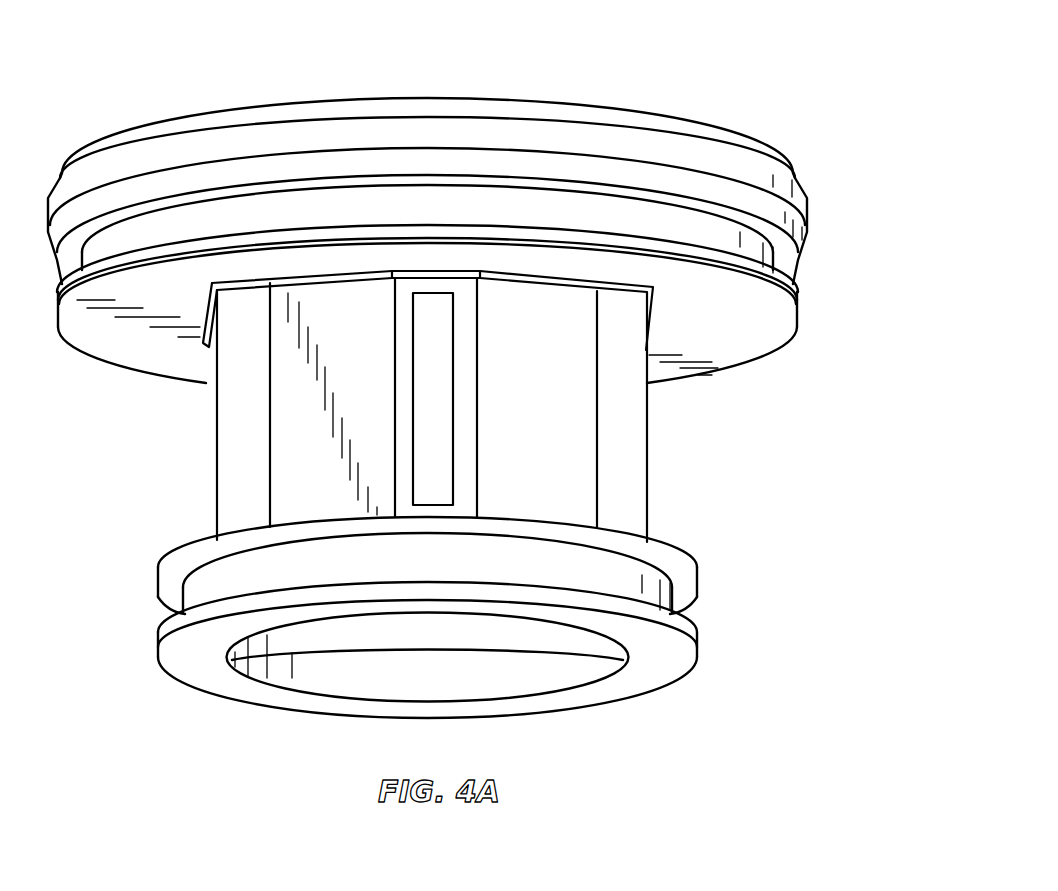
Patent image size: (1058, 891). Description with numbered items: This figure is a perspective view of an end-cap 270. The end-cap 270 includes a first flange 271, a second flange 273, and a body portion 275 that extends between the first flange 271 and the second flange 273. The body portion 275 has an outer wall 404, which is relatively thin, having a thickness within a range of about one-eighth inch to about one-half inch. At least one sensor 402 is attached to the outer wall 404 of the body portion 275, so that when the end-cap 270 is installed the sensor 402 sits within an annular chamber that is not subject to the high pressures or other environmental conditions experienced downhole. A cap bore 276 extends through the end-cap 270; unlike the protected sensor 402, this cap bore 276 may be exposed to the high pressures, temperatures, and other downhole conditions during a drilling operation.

The end-cap 270 is at (475, 393).
The second flange 273 is at (778, 183).
The body portion 275 is at (438, 287).
The sensor 402 is at (453, 293).
The outer wall 404 is at (298, 461).
The first flange 271 is at (462, 633).
The cap bore 276 is at (353, 650).